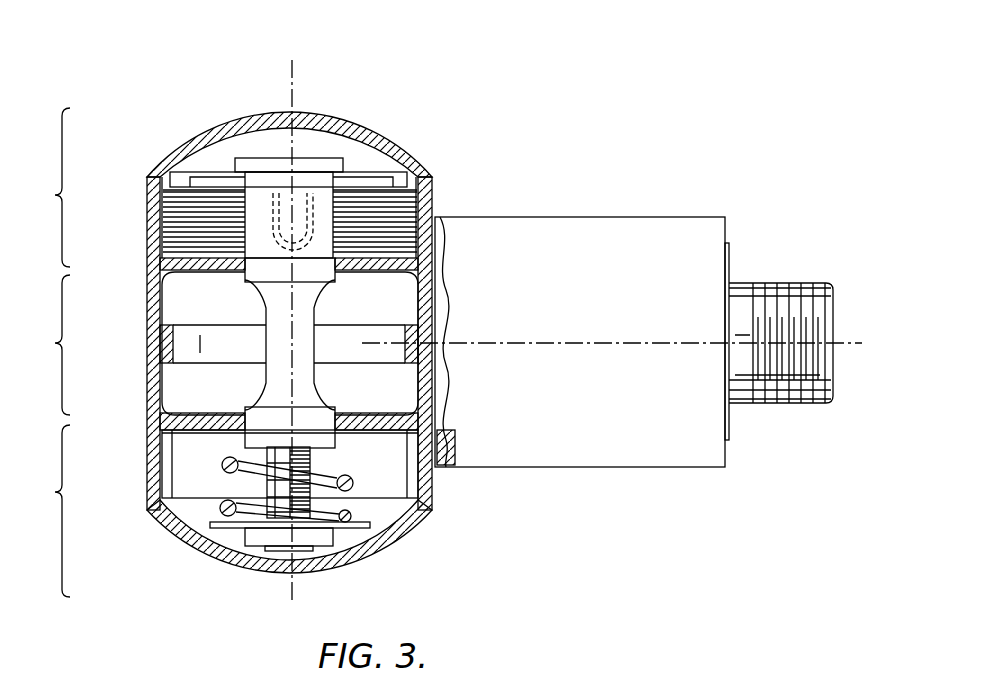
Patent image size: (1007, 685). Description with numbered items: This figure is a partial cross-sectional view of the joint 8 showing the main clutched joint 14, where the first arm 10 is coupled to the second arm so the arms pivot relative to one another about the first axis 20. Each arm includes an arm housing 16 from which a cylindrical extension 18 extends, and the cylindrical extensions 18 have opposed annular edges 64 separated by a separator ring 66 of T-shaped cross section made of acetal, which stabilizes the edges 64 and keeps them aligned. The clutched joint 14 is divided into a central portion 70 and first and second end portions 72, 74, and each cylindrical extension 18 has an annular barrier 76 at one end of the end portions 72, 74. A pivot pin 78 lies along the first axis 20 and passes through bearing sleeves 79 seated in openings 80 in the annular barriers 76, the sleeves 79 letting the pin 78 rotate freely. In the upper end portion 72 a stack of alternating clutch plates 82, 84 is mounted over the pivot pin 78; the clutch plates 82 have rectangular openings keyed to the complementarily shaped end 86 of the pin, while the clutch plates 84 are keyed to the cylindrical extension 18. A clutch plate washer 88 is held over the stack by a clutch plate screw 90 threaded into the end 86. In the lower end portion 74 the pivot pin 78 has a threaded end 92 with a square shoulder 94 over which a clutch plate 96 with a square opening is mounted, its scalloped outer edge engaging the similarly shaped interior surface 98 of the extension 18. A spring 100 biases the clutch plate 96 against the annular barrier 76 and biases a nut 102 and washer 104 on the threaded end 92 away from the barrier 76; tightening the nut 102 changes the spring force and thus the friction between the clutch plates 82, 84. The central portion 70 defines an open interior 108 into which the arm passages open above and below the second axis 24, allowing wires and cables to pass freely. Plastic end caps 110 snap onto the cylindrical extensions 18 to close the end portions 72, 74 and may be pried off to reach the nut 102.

The joint 8 is at (607, 62).
The first arm 10 is at (639, 338).
The main clutched joint 14 is at (294, 346).
The arm housing 16 is at (520, 470).
The cylindrical extension 18 is at (147, 234).
The first axis 20 is at (296, 70).
The second axis 24 is at (843, 350).
The annular edges 64 is at (174, 310).
The separator ring 66 is at (201, 353).
The central portion 70 is at (45, 345).
The first end portion 72 is at (45, 187).
The second end portion 74 is at (45, 511).
The annular barrier 76 is at (160, 263).
The pivot pin 78 is at (306, 322).
The bearing sleeves 79 is at (162, 298).
The openings 80 is at (336, 278).
The clutch plates 82 is at (428, 190).
The clutch plates 84 is at (428, 210).
The end of pivot pin 86 is at (322, 216).
The clutch plate washer 88 is at (218, 178).
The clutch plate screw 90 is at (268, 158).
The threaded end 92 is at (288, 556).
The square shoulder 94 is at (320, 440).
The clutch plate 96 is at (162, 490).
The interior surface 98 is at (398, 472).
The spring 100 is at (357, 487).
The nut 102 is at (262, 541).
The washer 104 is at (205, 528).
The open interior 108 is at (442, 312).
The end caps 110 is at (335, 116).